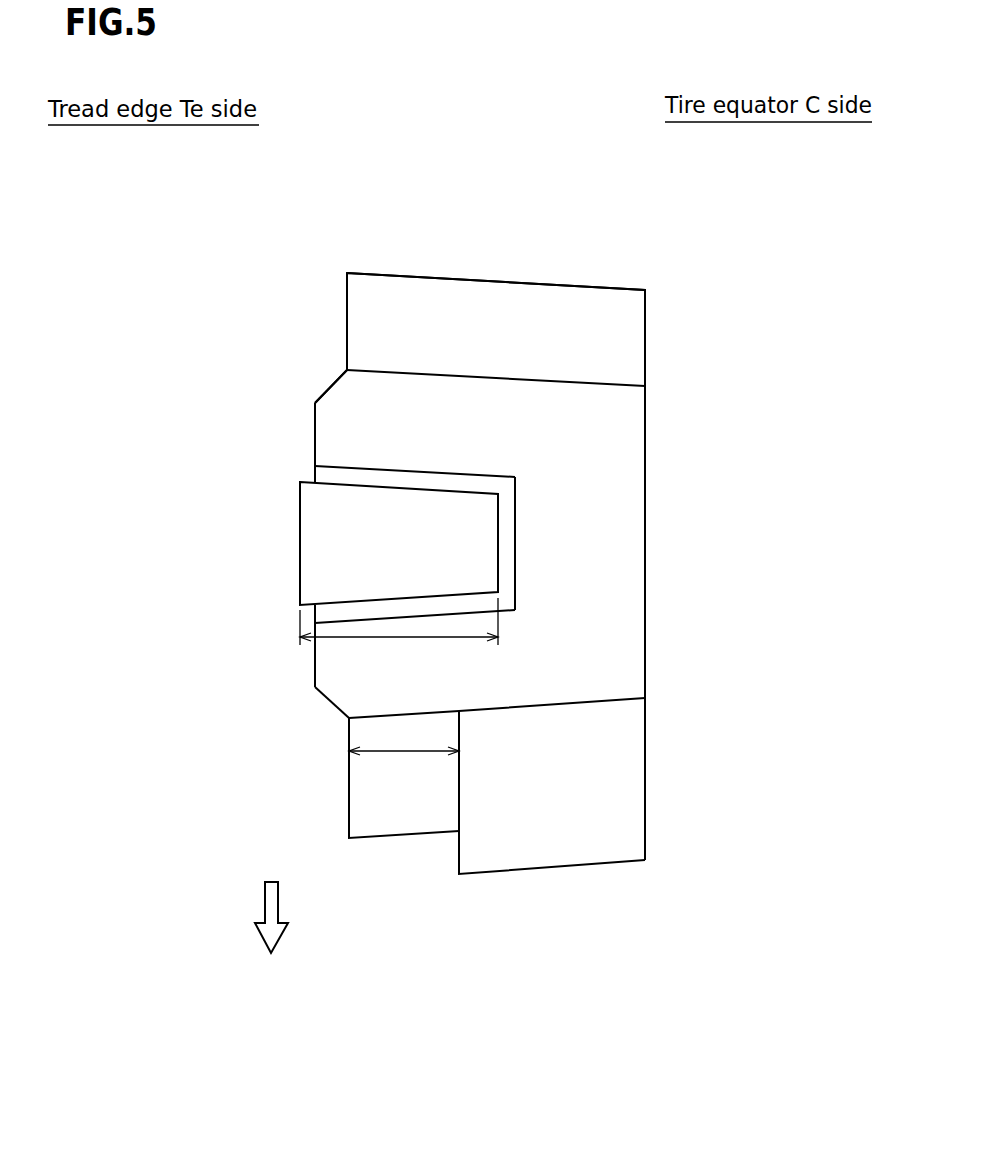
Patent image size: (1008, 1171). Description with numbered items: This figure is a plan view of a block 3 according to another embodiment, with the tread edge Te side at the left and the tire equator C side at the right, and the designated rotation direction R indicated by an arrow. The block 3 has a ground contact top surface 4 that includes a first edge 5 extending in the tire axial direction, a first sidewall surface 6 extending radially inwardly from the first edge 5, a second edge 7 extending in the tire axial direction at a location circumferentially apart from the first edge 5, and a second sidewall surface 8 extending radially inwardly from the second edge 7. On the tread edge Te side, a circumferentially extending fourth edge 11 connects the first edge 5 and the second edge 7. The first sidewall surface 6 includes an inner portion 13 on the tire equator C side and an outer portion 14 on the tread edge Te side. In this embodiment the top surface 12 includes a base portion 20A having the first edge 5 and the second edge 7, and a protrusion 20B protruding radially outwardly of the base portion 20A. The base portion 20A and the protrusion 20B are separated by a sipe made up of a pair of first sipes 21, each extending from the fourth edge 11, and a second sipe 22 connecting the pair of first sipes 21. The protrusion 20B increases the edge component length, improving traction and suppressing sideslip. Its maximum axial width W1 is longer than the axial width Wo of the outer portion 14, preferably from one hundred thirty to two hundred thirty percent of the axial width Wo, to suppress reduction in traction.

The block 3 is at (345, 208).
The ground contact top surface 4 is at (367, 413).
The first edge 5 is at (590, 702).
The first sidewall surface 6 is at (547, 945).
The second edge 7 is at (497, 377).
The second sidewall surface 8 is at (437, 310).
The fourth edge 11 is at (312, 672).
The top surface 12 is at (202, 445).
The inner portion 13 is at (550, 815).
The outer portion 14 is at (417, 795).
The base portion 20A is at (363, 438).
The protrusion 20B is at (363, 543).
The first sipe 21 is at (403, 610).
The second sipe 22 is at (507, 544).
The maximum axial width W1 is at (405, 645).
The axial width Wo is at (405, 753).
The rotation direction R is at (271, 932).